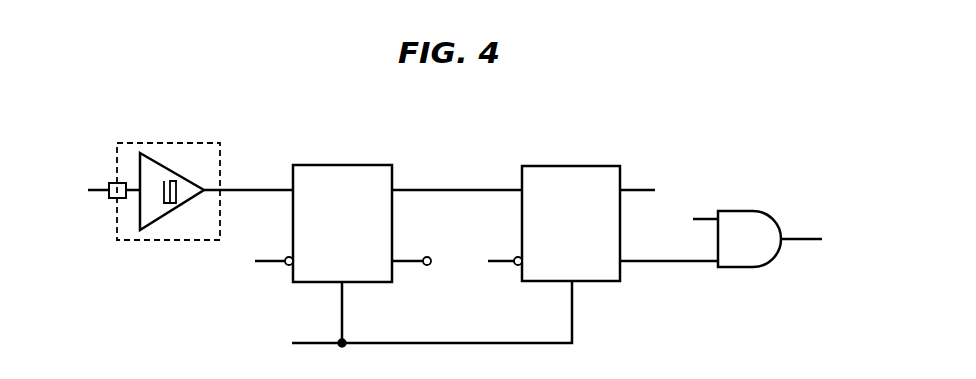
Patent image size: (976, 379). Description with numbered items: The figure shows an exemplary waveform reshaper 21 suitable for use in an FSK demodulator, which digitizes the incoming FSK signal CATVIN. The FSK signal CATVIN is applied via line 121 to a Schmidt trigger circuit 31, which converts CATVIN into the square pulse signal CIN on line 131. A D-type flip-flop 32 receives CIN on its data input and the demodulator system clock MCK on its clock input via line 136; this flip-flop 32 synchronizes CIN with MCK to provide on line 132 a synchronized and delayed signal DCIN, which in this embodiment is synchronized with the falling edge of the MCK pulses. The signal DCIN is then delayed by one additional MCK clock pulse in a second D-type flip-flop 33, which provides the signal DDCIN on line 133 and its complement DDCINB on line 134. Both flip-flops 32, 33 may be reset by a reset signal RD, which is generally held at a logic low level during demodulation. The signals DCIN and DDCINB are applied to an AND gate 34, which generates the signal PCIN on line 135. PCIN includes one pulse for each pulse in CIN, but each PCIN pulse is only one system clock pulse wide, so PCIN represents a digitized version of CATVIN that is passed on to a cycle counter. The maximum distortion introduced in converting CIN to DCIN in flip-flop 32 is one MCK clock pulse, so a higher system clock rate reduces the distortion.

The waveform reshaper 21 is at (104, 81).
The Schmidt trigger circuit 31 is at (171, 143).
The D-type flip-flop 32 is at (352, 165).
The second D-type flip-flop 33 is at (578, 166).
The AND gate 34 is at (762, 267).
The line 121 is at (56, 173).
The line 131 is at (258, 127).
The line 132 is at (453, 160).
The line 133 is at (685, 173).
The line 134 is at (670, 263).
The line 135 is at (840, 223).
The line 136 is at (240, 273).